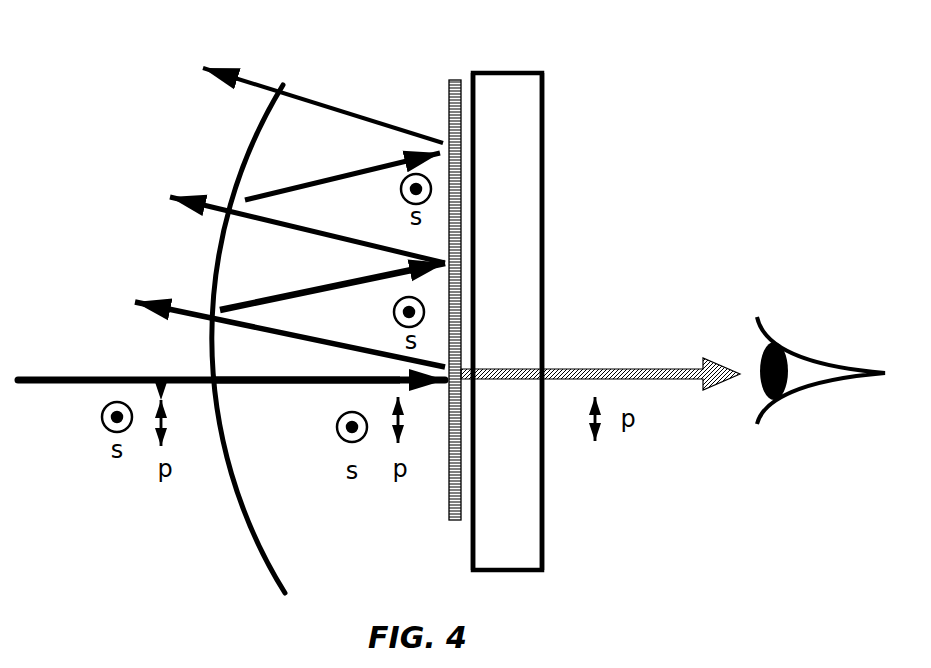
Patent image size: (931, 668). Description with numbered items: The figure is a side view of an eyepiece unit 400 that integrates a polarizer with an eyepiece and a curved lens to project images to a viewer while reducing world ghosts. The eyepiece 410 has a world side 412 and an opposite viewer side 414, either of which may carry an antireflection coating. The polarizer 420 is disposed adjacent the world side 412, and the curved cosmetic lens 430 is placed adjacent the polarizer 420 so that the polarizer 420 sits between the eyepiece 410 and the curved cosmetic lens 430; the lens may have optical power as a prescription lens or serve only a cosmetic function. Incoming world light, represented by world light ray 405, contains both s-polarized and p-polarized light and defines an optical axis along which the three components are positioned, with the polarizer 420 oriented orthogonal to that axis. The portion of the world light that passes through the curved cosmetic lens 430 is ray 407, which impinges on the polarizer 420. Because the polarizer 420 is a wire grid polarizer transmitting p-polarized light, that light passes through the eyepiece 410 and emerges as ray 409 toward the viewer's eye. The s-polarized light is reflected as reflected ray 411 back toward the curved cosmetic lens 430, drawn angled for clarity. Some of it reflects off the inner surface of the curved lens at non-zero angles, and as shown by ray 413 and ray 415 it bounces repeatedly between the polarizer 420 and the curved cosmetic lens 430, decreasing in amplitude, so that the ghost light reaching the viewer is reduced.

The eyepiece unit 400 is at (638, 56).
The world light ray 405 is at (120, 378).
The ray 407 is at (328, 384).
The ray 409 is at (684, 367).
The eyepiece 410 is at (542, 533).
The reflected ray 411 is at (276, 332).
The world side 412 is at (473, 563).
The ray 413 is at (284, 217).
The viewer side 414 is at (542, 478).
The ray 415 is at (295, 95).
The polarizer 420 is at (449, 499).
The curved cosmetic lens 430 is at (261, 551).